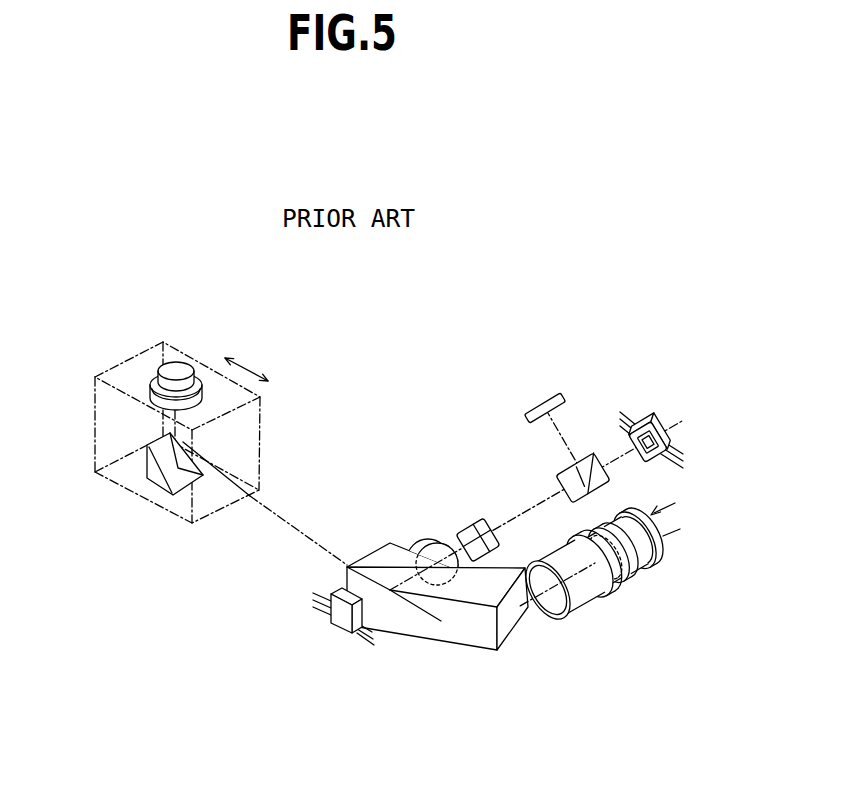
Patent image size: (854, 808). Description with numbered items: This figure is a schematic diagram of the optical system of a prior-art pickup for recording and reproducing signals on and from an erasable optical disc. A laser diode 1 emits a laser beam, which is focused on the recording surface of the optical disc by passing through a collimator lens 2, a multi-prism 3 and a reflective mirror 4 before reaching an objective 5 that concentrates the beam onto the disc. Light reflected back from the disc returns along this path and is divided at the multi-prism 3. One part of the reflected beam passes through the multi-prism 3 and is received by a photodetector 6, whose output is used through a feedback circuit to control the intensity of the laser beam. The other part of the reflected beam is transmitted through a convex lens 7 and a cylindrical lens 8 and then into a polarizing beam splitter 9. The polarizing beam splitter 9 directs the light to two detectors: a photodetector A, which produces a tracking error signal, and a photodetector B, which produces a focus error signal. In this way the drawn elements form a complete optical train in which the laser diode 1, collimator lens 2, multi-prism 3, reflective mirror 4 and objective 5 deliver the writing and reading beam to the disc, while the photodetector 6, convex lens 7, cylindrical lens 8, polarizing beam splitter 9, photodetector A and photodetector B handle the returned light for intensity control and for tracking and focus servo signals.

The laser diode 1 is at (663, 566).
The collimator lens 2 is at (585, 603).
The multi-prism 3 is at (477, 640).
The reflective mirror 4 is at (168, 485).
The objective 5 is at (187, 360).
The photodetector 6 is at (340, 622).
The convex lens 7 is at (430, 544).
The cylindrical lens 8 is at (463, 527).
The polarizing beam splitter 9 is at (612, 481).
The photodetector A is at (645, 418).
The photodetector B is at (543, 393).